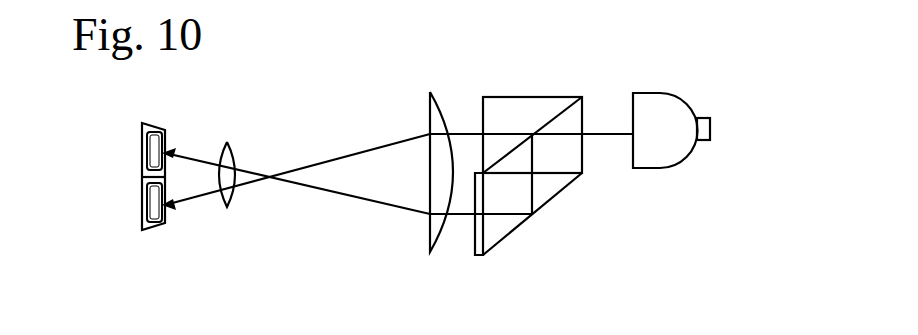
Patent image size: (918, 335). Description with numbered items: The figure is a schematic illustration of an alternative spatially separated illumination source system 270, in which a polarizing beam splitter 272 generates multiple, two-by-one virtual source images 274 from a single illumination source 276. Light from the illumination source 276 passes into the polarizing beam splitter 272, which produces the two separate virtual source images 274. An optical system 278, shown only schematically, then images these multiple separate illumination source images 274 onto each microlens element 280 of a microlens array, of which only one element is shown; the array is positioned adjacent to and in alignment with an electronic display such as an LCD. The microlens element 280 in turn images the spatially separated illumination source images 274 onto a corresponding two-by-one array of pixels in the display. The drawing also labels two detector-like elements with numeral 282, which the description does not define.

The spatially separated illumination source system 270 is at (654, 242).
The polarizing beam splitter 272 is at (540, 107).
The virtual source images 274 is at (127, 180).
The illumination source 276 is at (662, 113).
The optical system 278 is at (436, 232).
The microlens element 280 is at (230, 210).
The detector element 282 is at (152, 123).